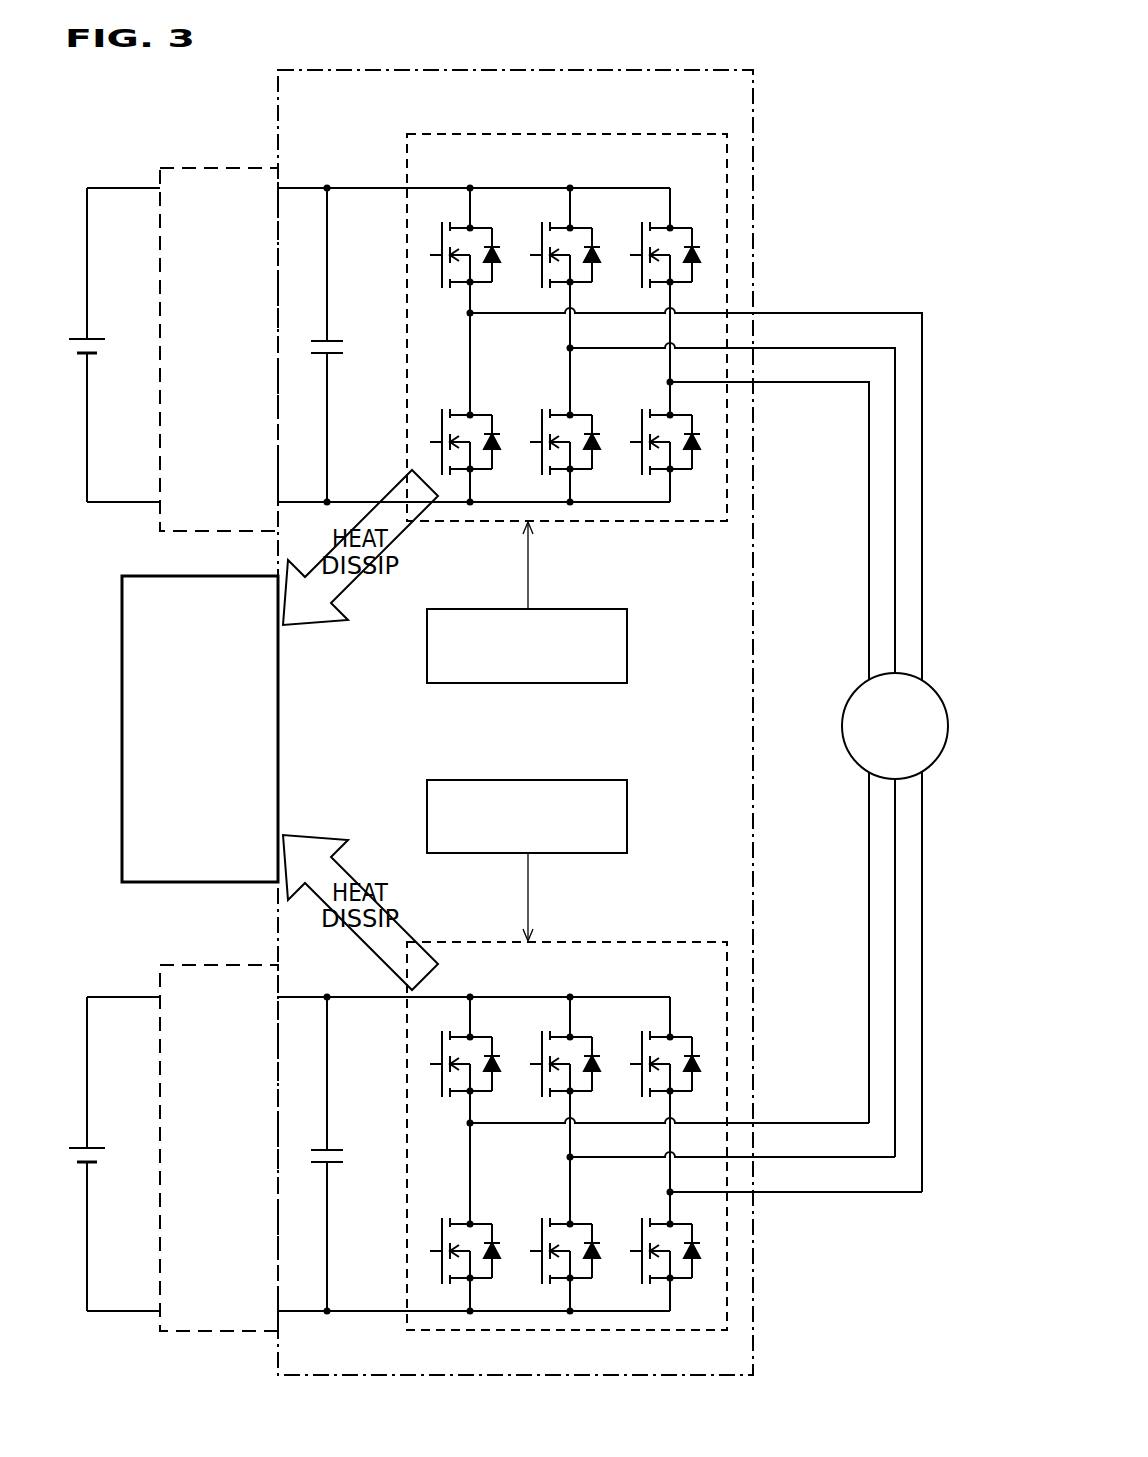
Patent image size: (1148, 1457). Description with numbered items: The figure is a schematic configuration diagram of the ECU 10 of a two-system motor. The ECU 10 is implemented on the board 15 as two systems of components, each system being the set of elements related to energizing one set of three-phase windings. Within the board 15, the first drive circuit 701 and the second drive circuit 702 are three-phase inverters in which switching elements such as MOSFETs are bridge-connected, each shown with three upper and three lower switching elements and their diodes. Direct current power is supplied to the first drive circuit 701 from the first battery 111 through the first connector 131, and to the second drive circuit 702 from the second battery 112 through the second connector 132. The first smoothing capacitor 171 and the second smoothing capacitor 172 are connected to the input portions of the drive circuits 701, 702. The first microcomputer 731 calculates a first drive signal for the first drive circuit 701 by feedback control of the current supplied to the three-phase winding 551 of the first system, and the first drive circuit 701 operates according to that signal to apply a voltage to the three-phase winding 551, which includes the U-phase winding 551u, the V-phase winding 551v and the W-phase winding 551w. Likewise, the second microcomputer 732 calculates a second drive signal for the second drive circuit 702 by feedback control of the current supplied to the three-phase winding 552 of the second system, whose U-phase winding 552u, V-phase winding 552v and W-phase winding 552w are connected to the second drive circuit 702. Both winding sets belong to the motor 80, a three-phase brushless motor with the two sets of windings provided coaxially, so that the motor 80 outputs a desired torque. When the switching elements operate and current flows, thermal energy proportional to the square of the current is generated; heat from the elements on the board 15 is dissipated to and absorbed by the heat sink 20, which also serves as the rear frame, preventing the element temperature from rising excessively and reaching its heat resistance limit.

The ECU 10 is at (559, 688).
The board 15 is at (521, 70).
The heat sink 20 is at (122, 734).
The motor 80 is at (931, 682).
The first battery 111 is at (76, 337).
The second battery 112 is at (76, 1146).
The first connector 131 is at (216, 168).
The second connector 132 is at (217, 965).
The first smoothing capacitor 171 is at (335, 339).
The second smoothing capacitor 172 is at (335, 1148).
The first three-phase winding 551 is at (695, 695).
The U-phase winding 551u is at (772, 313).
The V-phase winding 551v is at (772, 348).
The W-phase winding 551w is at (772, 382).
The second three-phase winding 552 is at (695, 1189).
The U-phase winding 552u is at (772, 1123).
The V-phase winding 552v is at (772, 1157).
The W-phase winding 552w is at (772, 1192).
The first drive circuit 701 is at (613, 134).
The second drive circuit 702 is at (613, 942).
The first microcomputer 731 is at (493, 609).
The second microcomputer 732 is at (493, 780).